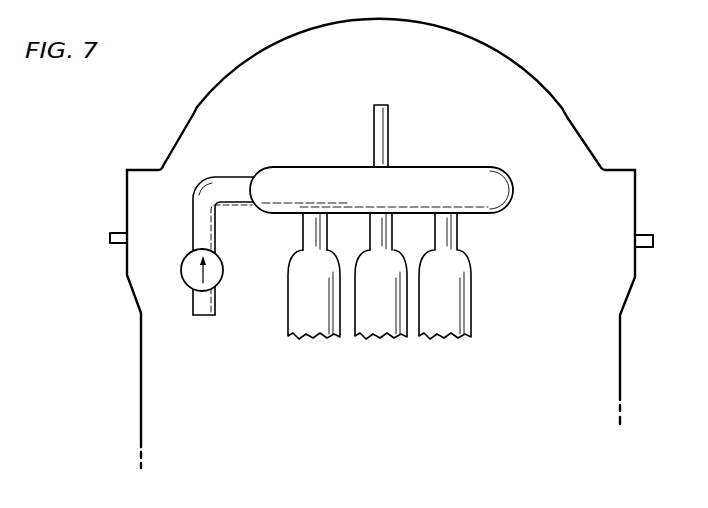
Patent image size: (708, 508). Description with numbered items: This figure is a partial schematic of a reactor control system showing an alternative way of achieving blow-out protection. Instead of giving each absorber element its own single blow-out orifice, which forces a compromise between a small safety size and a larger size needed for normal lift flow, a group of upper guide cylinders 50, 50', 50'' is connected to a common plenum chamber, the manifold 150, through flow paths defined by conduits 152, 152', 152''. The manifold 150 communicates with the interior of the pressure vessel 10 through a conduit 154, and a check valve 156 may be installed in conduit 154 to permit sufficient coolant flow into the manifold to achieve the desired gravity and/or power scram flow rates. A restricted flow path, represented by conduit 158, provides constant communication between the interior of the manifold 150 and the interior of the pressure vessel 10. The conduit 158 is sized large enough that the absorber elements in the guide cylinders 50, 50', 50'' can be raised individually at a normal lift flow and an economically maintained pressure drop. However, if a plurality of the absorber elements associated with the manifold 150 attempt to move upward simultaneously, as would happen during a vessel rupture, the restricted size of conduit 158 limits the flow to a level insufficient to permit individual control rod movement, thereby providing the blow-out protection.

The pressure vessel 10 is at (575, 128).
The manifold 150 is at (381, 190).
The conduit 152 is at (286, 235).
The conduit 152' is at (361, 234).
The conduit 152'' is at (477, 233).
The conduit 154 is at (232, 157).
The check valve 156 is at (183, 262).
The conduit 158 is at (390, 133).
The upper guide cylinder 50 is at (314, 316).
The upper guide cylinder 50' is at (381, 316).
The upper guide cylinder 50'' is at (447, 316).